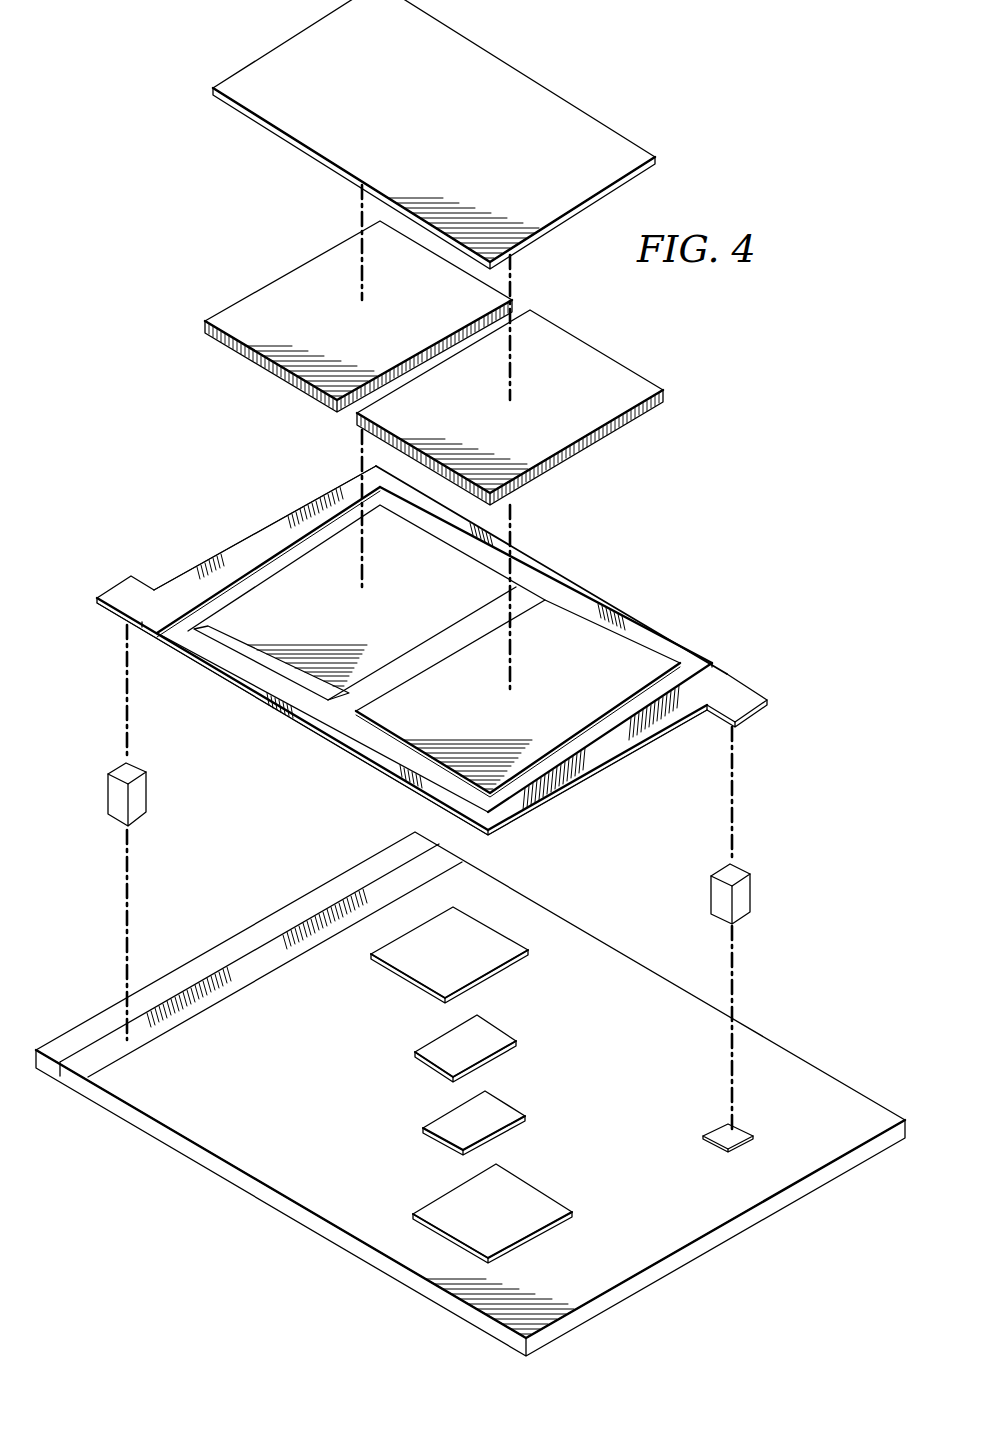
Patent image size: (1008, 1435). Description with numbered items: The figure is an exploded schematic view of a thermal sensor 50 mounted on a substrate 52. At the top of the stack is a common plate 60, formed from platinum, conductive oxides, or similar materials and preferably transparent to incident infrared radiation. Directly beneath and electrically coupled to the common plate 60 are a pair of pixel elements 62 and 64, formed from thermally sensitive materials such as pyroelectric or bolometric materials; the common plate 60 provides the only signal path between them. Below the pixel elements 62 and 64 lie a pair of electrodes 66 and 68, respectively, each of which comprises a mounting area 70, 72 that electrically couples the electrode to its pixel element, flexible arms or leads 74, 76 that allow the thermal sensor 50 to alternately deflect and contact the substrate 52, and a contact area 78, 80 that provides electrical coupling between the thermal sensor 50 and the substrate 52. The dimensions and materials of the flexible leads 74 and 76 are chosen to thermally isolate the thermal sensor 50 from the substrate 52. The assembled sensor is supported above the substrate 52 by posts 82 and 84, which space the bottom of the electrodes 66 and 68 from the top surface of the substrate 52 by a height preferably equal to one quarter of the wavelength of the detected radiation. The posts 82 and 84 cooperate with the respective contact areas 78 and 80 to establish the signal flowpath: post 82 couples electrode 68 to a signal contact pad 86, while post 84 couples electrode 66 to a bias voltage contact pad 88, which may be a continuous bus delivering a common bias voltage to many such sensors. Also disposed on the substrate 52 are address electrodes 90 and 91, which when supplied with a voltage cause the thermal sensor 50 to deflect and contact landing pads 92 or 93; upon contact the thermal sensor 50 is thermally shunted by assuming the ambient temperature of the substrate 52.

The thermal sensor 50 is at (124, 298).
The substrate 52 is at (722, 1242).
The common plate 60 is at (490, 68).
The pixel element 62 is at (597, 357).
The pixel element 64 is at (298, 278).
The electrode 66 is at (644, 611).
The electrode 68 is at (246, 706).
The mounting area 70 is at (580, 709).
The mounting area 72 is at (331, 616).
The flexible lead 74 is at (331, 736).
The flexible lead 76 is at (375, 467).
The contact area 78 is at (738, 690).
The contact area 80 is at (118, 590).
The post 82 is at (752, 896).
The post 84 is at (148, 795).
The signal contact pad 86 is at (752, 1146).
The bias voltage contact pad 88 is at (88, 1052).
The address electrode 90 is at (482, 1130).
The address electrode 91 is at (472, 1054).
The landing pad 92 is at (528, 1224).
The landing pad 93 is at (482, 965).